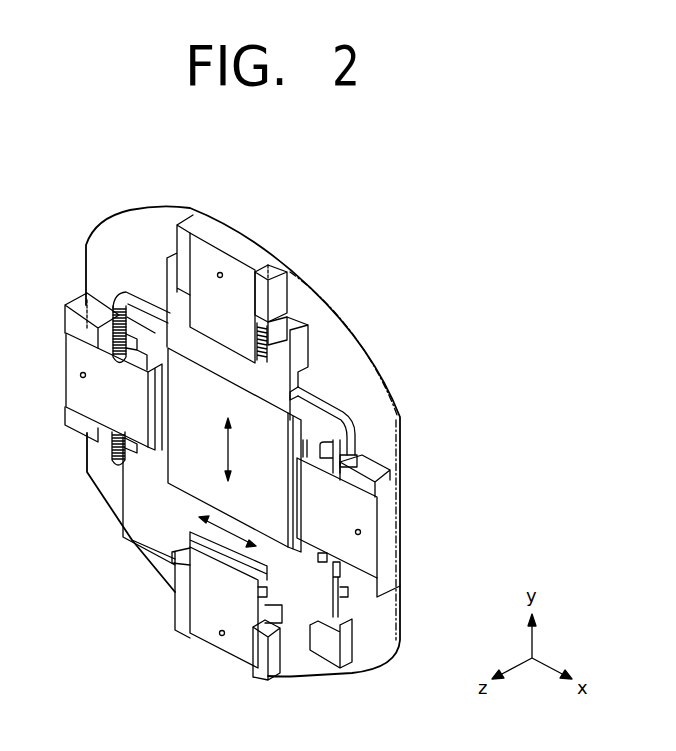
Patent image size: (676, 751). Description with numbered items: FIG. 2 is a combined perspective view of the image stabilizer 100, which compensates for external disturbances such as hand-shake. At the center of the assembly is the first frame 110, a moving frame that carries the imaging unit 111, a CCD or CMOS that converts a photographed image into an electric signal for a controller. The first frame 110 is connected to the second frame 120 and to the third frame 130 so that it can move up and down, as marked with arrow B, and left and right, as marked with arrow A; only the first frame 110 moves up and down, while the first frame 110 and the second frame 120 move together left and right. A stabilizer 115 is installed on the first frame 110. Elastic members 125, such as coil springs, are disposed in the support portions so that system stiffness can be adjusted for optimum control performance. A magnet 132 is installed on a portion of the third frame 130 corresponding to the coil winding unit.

The image stabilizer 100 is at (433, 249).
The first frame 110 is at (306, 630).
The imaging unit 111 is at (188, 472).
The stabilizer 115 is at (345, 472).
The second frame 120 is at (330, 403).
The elastic member 125 is at (113, 308).
The third frame 130 is at (373, 640).
The magnet 132 is at (233, 653).